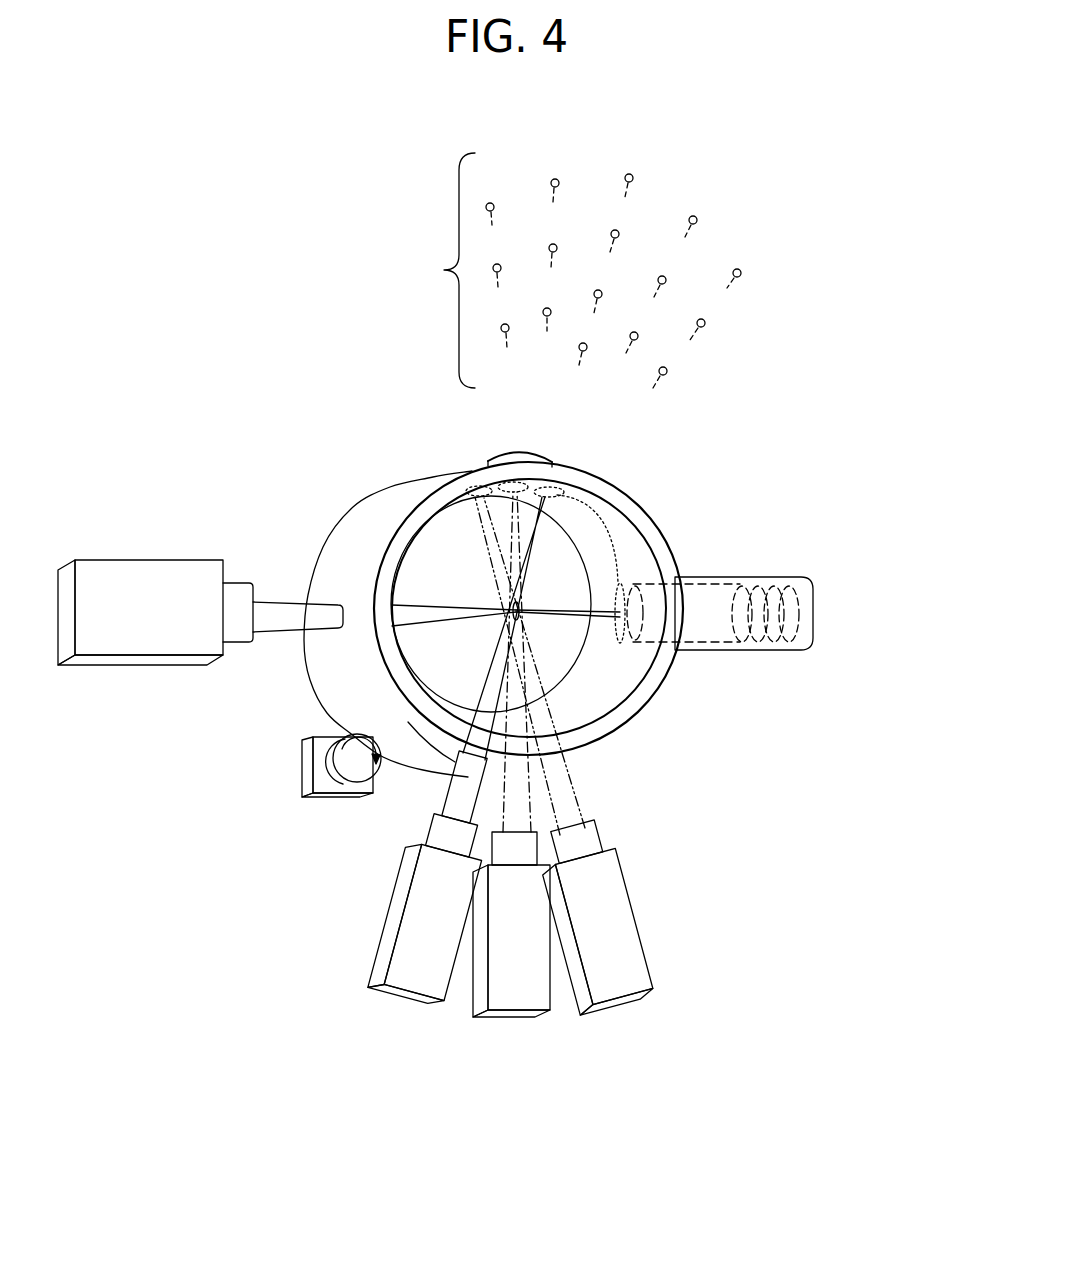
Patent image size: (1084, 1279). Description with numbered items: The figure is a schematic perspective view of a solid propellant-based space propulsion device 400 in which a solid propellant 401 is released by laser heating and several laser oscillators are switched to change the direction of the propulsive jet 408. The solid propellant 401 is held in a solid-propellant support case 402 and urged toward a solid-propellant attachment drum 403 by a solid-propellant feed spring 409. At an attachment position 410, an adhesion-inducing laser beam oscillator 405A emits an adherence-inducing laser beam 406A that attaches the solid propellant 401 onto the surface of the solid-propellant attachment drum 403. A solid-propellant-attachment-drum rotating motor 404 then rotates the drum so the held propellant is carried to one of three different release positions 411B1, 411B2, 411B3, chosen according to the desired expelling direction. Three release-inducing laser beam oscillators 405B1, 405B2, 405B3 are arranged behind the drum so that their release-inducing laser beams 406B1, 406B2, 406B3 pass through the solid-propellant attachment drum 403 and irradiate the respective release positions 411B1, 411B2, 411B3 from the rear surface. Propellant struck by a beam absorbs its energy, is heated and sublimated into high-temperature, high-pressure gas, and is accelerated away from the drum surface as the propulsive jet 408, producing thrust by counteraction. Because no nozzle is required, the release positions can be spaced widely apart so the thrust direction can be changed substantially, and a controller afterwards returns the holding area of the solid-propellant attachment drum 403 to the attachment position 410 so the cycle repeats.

The solid propellant-based space propulsion device 400 is at (830, 173).
The solid propellant 401 is at (727, 577).
The solid-propellant support case 402 is at (783, 575).
The solid-propellant attachment drum 403 is at (390, 492).
The solid-propellant-attachment-drum rotating motor 404 is at (318, 795).
The adhesion-inducing laser beam oscillator 405A is at (167, 560).
The release-inducing laser beam oscillator 405B1 is at (403, 993).
The release-inducing laser beam oscillator 405B2 is at (513, 1013).
The release-inducing laser beam oscillator 405B3 is at (617, 997).
The adherence-inducing laser beam 406A is at (303, 602).
The release-inducing laser beam 406B1 is at (440, 797).
The release-inducing laser beam 406B2 is at (537, 807).
The release-inducing laser beam 406B3 is at (583, 784).
The propulsive jet 408 is at (436, 267).
The solid-propellant feed spring 409 is at (797, 610).
The attachment position 410 is at (637, 601).
The release position 411B1 is at (562, 488).
The release position 411B2 is at (503, 479).
The release position 411B3 is at (470, 485).